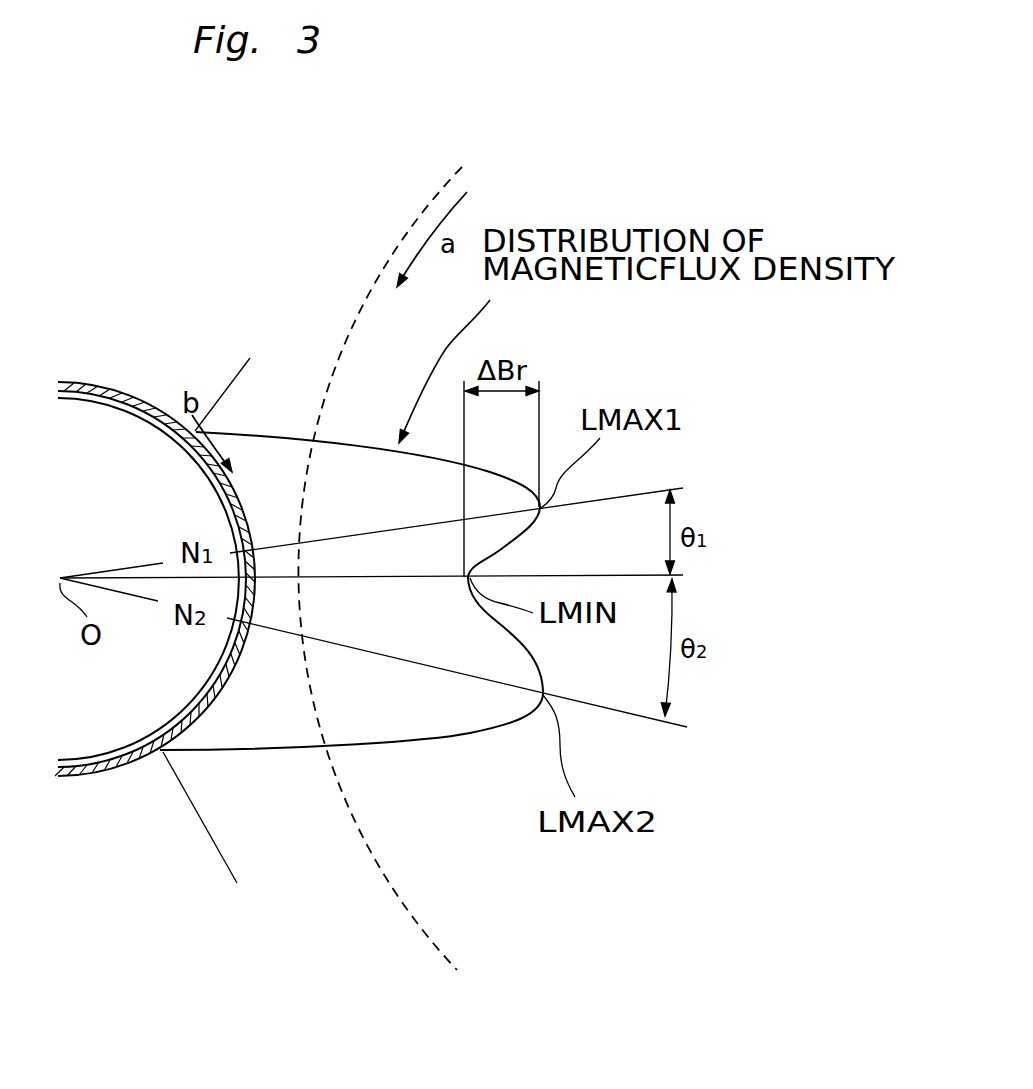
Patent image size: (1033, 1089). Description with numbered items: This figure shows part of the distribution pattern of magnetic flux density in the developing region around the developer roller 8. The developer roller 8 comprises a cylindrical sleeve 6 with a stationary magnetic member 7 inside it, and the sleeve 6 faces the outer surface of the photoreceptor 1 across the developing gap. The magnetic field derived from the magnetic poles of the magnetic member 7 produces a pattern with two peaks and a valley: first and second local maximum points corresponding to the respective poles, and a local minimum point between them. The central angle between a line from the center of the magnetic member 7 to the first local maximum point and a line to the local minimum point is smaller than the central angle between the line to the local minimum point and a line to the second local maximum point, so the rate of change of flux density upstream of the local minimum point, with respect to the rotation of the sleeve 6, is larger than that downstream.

The photoreceptor 1 is at (417, 923).
The sleeve 6 is at (132, 765).
The magnetic member 7 is at (102, 742).
The developer roller 8 is at (155, 669).